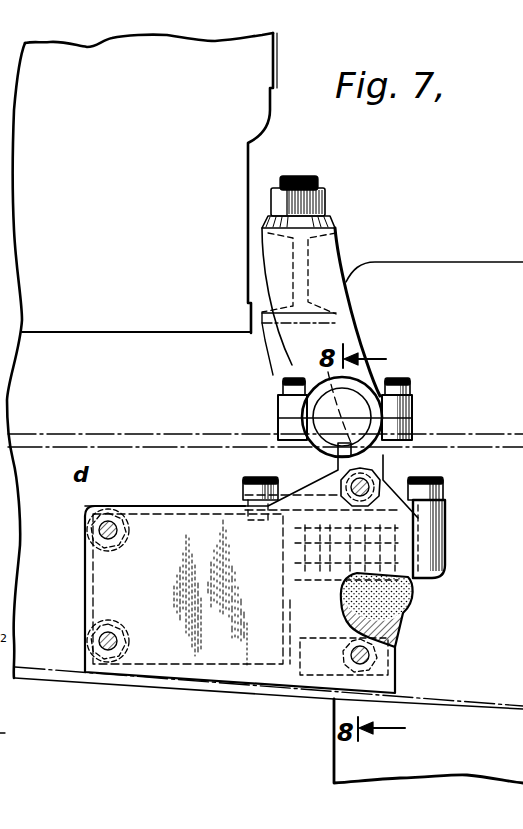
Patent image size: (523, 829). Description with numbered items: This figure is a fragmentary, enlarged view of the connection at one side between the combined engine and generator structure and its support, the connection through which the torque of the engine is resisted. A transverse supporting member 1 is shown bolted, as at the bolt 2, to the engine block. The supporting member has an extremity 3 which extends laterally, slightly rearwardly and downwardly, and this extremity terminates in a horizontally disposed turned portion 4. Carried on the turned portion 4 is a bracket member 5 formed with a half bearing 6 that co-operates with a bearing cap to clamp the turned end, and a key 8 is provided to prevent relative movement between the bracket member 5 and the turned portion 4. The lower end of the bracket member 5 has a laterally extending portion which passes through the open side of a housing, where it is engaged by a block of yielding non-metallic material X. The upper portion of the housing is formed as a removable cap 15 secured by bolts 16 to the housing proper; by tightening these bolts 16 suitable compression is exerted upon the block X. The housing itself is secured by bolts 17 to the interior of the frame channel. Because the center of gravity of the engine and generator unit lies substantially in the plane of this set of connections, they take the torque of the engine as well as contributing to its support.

The transverse supporting member 1 is at (302, 263).
The bolt 2 is at (305, 197).
The extremity 3 is at (302, 347).
The turned portion 4 is at (358, 400).
The half bearing 6 is at (413, 430).
The key 8 is at (392, 453).
The bracket member 5 is at (313, 467).
The removable cap 15 is at (445, 508).
The bolt 16 is at (247, 485).
The bolt 17 is at (120, 642).
The block of yielding non-metallic material X is at (417, 600).